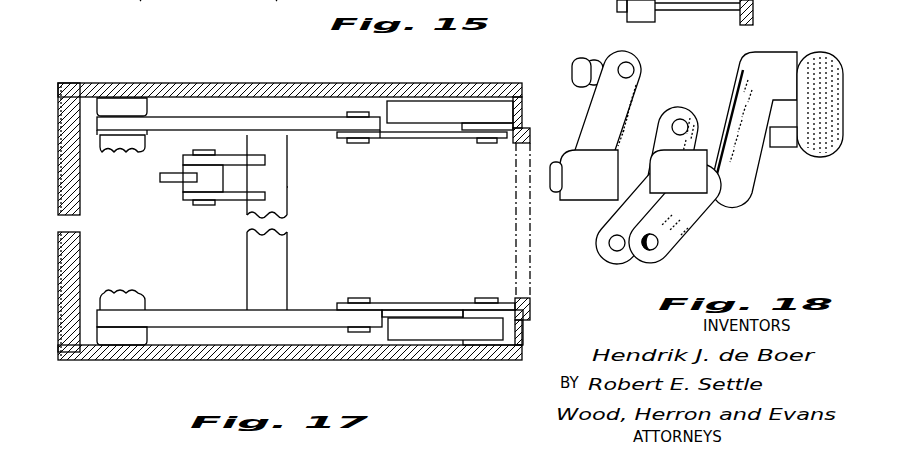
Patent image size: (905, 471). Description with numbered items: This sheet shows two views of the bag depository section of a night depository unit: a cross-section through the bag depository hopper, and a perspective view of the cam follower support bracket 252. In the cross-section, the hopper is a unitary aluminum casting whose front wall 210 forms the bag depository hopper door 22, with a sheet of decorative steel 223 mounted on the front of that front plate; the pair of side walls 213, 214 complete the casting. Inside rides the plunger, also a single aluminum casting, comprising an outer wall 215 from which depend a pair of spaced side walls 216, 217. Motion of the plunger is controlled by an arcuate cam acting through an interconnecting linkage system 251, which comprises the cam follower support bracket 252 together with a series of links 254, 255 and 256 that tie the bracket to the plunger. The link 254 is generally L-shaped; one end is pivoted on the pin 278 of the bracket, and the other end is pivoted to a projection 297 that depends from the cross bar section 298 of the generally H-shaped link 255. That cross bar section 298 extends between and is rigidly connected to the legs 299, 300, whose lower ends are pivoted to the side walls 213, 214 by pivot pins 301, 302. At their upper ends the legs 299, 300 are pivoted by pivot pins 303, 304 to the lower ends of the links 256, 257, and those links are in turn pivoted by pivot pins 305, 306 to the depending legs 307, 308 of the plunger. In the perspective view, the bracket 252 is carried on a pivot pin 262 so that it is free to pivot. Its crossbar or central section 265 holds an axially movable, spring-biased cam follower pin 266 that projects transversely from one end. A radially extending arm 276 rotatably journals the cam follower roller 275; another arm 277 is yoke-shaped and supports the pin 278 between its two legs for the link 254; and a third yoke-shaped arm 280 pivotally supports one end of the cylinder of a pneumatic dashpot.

In FIG. 17, the bag depository hopper door 22 is at (272, 223).
In FIG. 17, the front wall 210 is at (80, 238).
In FIG. 17, the side wall 213 is at (258, 95).
In FIG. 17, the side wall 214 is at (168, 350).
In FIG. 17, the outer wall 215 is at (528, 132).
In FIG. 17, the side wall 216 is at (428, 113).
In FIG. 17, the side wall 217 is at (440, 336).
In FIG. 17, the sheet of decorative steel 223 is at (58, 98).
In FIG. 17, the interconnecting linkage system 251 is at (192, 208).
In FIG. 18, the cam follower support bracket 252 is at (777, 124).
In FIG. 17, the link 254 is at (162, 182).
In FIG. 17, the link 255 is at (300, 187).
In FIG. 17, the link 256 is at (437, 141).
In FIG. 17, the link 257 is at (432, 302).
In FIG. 18, the pivot pin 262 is at (694, 108).
In FIG. 15, the crossbar or central section 265 is at (134, 12).
In FIG. 18, the crossbar or central section 265 is at (718, 210).
In FIG. 18, the cam follower pin 266 is at (562, 197).
In FIG. 18, the cam follower roller 275 is at (582, 57).
In FIG. 18, the arm 276 is at (636, 66).
In FIG. 15, the arm 277 is at (276, 0).
In FIG. 18, the arm 277 is at (598, 270).
In FIG. 18, the pin 278 is at (660, 244).
In FIG. 18, the arm 280 is at (800, 55).
In FIG. 17, the projection 297 is at (268, 200).
In FIG. 17, the cross bar section 298 is at (287, 265).
In FIG. 17, the leg 299 is at (310, 136).
In FIG. 17, the leg 300 is at (319, 312).
In FIG. 17, the pivot pin 301 is at (133, 152).
In FIG. 17, the pivot pin 302 is at (128, 292).
In FIG. 17, the pivot pin 303 is at (358, 144).
In FIG. 17, the pivot pin 304 is at (362, 297).
In FIG. 17, the pivot pin 305 is at (487, 145).
In FIG. 17, the pivot pin 306 is at (486, 297).
In FIG. 17, the depending leg 307 is at (490, 126).
In FIG. 17, the depending leg 308 is at (492, 326).